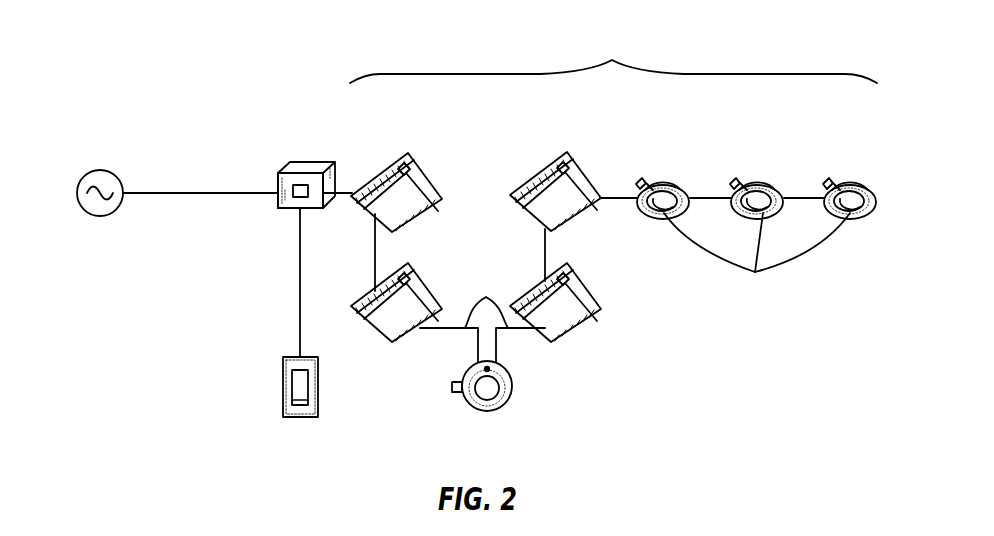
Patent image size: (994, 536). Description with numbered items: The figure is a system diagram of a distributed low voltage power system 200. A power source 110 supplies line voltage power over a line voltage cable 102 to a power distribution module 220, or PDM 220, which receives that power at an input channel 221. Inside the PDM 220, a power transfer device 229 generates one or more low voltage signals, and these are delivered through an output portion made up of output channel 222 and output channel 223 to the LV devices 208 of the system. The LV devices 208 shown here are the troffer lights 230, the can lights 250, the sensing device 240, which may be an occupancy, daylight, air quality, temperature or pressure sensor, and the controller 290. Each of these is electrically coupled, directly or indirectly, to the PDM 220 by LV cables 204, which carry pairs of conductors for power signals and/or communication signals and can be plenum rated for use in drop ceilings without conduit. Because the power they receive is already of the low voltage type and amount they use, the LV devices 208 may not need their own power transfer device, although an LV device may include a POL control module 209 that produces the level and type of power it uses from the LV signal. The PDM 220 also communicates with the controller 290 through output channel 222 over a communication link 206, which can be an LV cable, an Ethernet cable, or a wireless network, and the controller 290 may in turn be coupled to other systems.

The distributed low voltage power system 200 is at (116, 80).
The power source 110 is at (100, 170).
The line voltage cable 102 is at (190, 192).
The power distribution module 220 is at (305, 162).
The input channel 221 is at (277, 190).
The output channel 222 is at (304, 209).
The output channel 223 is at (324, 192).
The power transfer device 229 is at (298, 198).
The LV cable 204 is at (376, 250).
The communication link 206 is at (300, 307).
The LV devices 208 is at (613, 58).
The POL control module 209 is at (404, 172).
The troffer lights 230 is at (406, 152).
The sensing device 240 is at (487, 411).
The can lights 250 is at (756, 242).
The controller 290 is at (283, 386).